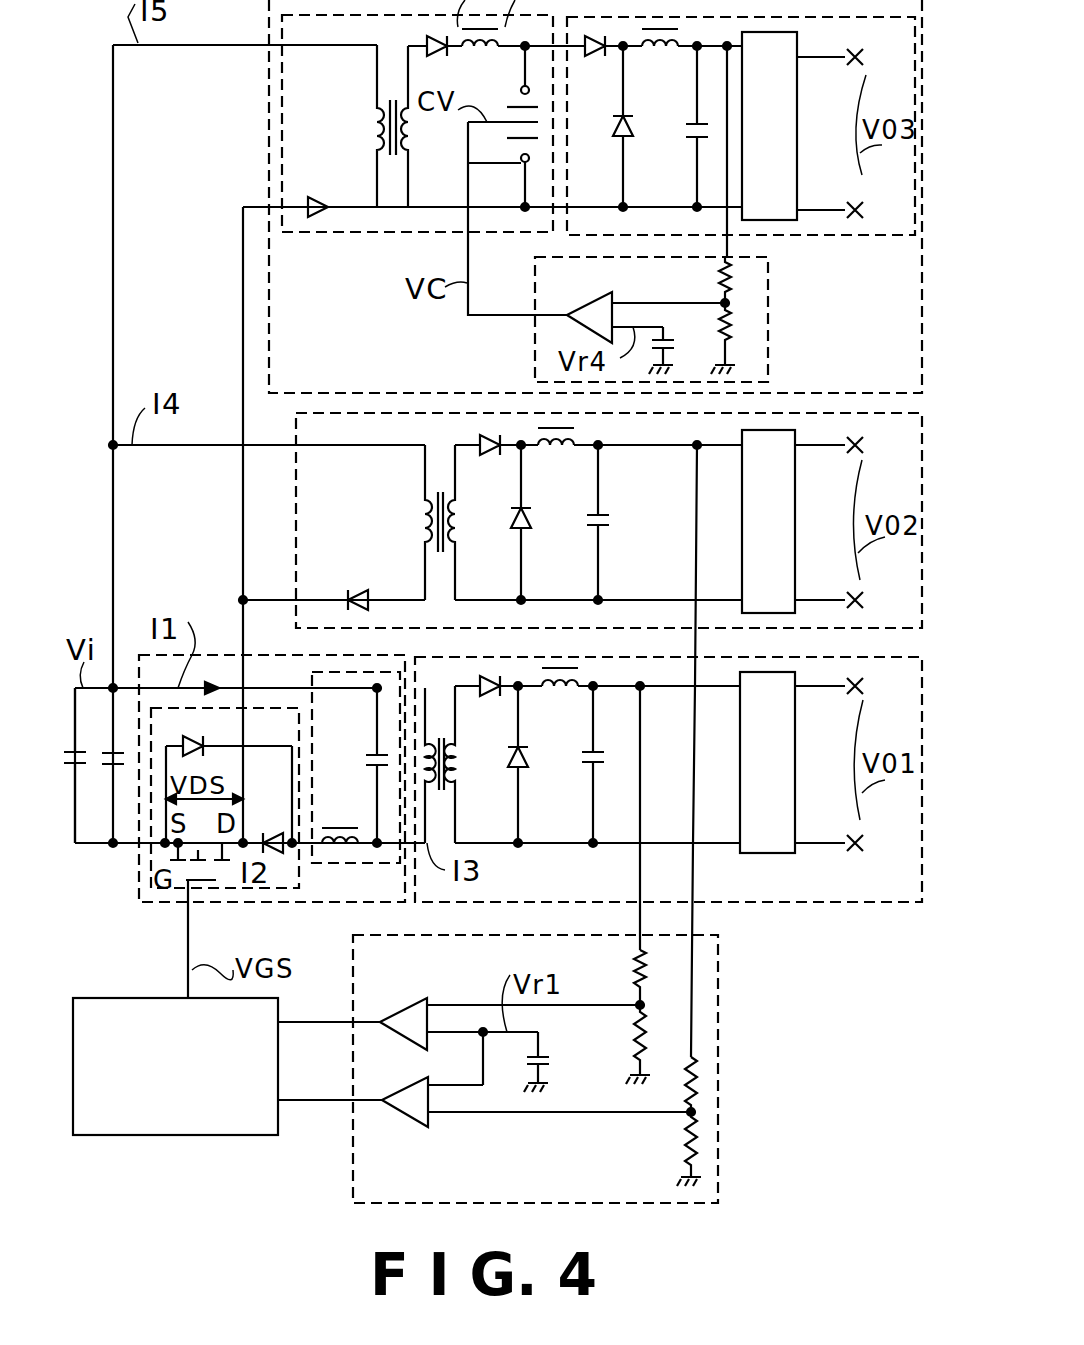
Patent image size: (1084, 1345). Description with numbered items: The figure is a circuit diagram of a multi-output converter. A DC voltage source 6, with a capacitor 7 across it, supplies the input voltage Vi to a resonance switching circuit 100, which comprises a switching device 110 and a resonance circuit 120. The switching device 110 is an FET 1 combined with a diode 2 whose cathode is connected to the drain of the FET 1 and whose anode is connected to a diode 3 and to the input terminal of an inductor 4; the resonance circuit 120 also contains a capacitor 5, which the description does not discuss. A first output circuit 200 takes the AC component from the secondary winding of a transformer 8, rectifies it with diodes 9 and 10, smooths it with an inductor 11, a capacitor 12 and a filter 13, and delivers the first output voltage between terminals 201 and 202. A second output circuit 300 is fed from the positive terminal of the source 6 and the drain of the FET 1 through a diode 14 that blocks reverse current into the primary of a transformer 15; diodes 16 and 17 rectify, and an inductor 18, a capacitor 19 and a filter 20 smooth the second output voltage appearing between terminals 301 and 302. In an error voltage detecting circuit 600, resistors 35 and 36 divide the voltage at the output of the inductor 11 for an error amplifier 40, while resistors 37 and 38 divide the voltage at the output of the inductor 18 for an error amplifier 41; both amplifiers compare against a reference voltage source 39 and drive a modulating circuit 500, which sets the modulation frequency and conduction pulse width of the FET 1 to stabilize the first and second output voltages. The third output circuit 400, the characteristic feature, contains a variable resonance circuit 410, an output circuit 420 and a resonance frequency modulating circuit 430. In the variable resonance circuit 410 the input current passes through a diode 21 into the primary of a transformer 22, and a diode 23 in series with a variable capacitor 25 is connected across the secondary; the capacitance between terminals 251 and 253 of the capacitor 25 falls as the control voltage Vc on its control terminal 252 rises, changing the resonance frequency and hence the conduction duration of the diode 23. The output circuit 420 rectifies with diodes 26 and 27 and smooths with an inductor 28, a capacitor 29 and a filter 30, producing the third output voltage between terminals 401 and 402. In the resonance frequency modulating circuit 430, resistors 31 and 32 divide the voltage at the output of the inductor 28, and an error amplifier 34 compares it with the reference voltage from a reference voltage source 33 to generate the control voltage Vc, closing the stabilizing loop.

The FET 1 is at (196, 840).
The diode 2 is at (277, 833).
The diode 3 is at (188, 737).
The inductor 4 is at (350, 828).
The capacitor 5 is at (372, 752).
The DC voltage source 6 is at (82, 750).
The capacitor 7 is at (103, 755).
The transformer 8 is at (445, 750).
The diode 9 is at (485, 703).
The diode 10 is at (515, 765).
The inductor 11 is at (562, 692).
The capacitor 12 is at (583, 758).
The filter 13 is at (795, 798).
The diode 14 is at (367, 593).
The transformer 15 is at (440, 490).
The diode 16 is at (486, 456).
The diode 17 is at (508, 524).
The inductor 18 is at (558, 450).
The capacitor 19 is at (606, 528).
The filter 20 is at (795, 550).
The diode 21 is at (318, 195).
The transformer 22 is at (399, 141).
The diode 23 is at (430, 40).
The variable capacitor 25 is at (487, 110).
The diode 26 is at (593, 55).
The diode 27 is at (618, 123).
The inductor 28 is at (668, 50).
The capacitor 29 is at (693, 136).
The filter 30 is at (797, 162).
The resistor 31 is at (720, 277).
The resistor 32 is at (727, 333).
The reference voltage source 33 is at (693, 346).
The error amplifier 34 is at (600, 292).
The resistor 35 is at (647, 982).
The resistor 36 is at (647, 1033).
The resistor 37 is at (697, 1080).
The resistor 38 is at (683, 1133).
The reference voltage source 39 is at (553, 1063).
The error amplifier 40 is at (408, 1007).
The error amplifier 41 is at (408, 1127).
The resonance switching circuit 100 is at (137, 873).
The switching device 110 is at (212, 888).
The resonance circuit 120 is at (357, 866).
The first output circuit 200 is at (775, 902).
The terminal 201 is at (831, 705).
The terminal 202 is at (831, 827).
The terminal 251 is at (522, 88).
The control terminal 252 is at (490, 140).
The terminal 253 is at (468, 163).
The second output circuit 300 is at (296, 483).
The terminal 301 is at (830, 465).
The terminal 302 is at (830, 586).
The third output circuit 400 is at (268, 128).
The terminal 401 is at (832, 77).
The terminal 402 is at (832, 194).
The variable resonance circuit 410 is at (352, 233).
The output circuit 420 is at (848, 237).
The resonance frequency modulating circuit 430 is at (535, 335).
The modulating circuit 500 is at (230, 1137).
The error voltage detecting circuit 600 is at (727, 1037).